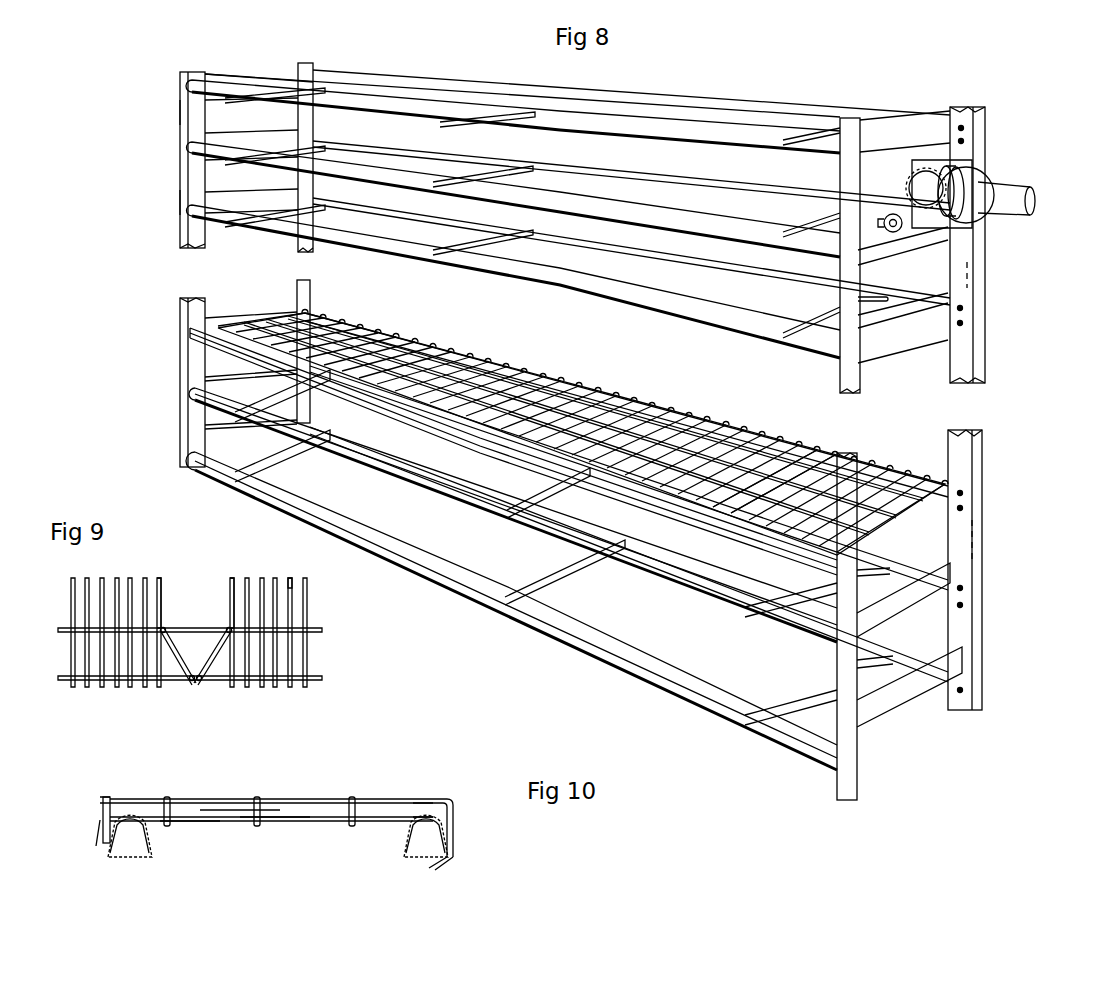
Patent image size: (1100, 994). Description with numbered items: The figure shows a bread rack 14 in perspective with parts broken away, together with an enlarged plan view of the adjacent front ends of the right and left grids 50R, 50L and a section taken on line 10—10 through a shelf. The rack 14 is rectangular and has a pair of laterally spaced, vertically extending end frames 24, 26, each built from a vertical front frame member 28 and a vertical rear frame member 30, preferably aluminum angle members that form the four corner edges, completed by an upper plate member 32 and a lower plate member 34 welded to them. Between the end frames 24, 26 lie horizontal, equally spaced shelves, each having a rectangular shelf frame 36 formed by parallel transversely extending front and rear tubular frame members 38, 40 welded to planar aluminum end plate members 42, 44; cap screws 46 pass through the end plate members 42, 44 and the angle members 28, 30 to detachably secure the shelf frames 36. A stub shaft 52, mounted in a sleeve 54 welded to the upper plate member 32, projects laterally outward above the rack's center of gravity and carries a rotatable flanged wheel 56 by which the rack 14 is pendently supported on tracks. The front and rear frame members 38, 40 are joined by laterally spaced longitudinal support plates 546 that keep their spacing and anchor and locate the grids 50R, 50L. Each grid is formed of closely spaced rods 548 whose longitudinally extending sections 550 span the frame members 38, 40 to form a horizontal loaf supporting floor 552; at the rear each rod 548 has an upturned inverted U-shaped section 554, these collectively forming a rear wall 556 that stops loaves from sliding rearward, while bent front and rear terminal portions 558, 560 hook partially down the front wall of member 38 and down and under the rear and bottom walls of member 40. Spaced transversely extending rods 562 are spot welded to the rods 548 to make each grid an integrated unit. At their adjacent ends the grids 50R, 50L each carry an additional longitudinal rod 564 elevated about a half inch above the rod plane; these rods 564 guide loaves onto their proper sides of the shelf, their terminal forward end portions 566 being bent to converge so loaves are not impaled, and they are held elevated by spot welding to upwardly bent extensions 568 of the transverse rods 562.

In FIG. 8, the section line 10 is at (485, 443).
In FIG. 8, the rack 14 is at (178, 201).
In FIG. 8, the end frame 24 is at (178, 111).
In FIG. 8, the end frame 26 is at (990, 132).
In FIG. 8, the vertical front frame member 28 is at (190, 72).
In FIG. 8, the vertical rear frame member 30 is at (312, 63).
In FIG. 8, the upper plate member 32 is at (965, 160).
In FIG. 8, the lower plate member 34 is at (966, 662).
In FIG. 8, the shelf frame 36 is at (822, 113).
In FIG. 8, the front tubular frame member 38 is at (740, 128).
In FIG. 10, the front tubular frame member 38 is at (145, 845).
In FIG. 8, the rear tubular frame member 40 is at (742, 112).
In FIG. 10, the rear tubular frame member 40 is at (402, 845).
In FIG. 8, the end plate member 42 is at (258, 73).
In FIG. 8, the end plate member 44 is at (928, 126).
In FIG. 8, the cap screw 46 is at (966, 323).
In FIG. 8, the left grid 50L is at (355, 317).
In FIG. 9, the left grid 50L is at (68, 600).
In FIG. 10, the left grid 50L is at (290, 800).
In FIG. 8, the right grid 50R is at (752, 420).
In FIG. 9, the right grid 50R is at (310, 600).
In FIG. 8, the stub shaft 52 is at (1036, 200).
In FIG. 8, the sleeve 54 is at (915, 187).
In FIG. 8, the flanged wheel 56 is at (990, 218).
In FIG. 8, the support plate 546 is at (552, 270).
In FIG. 8, the rod 548 is at (466, 352).
In FIG. 9, the rod 548 is at (305, 570).
In FIG. 10, the rod 548 is at (245, 822).
In FIG. 8, the longitudinally extending section 550 is at (270, 317).
In FIG. 10, the longitudinally extending section 550 is at (295, 820).
In FIG. 8, the bread loaf supporting floor 552 is at (392, 384).
In FIG. 9, the bread loaf supporting floor 552 is at (310, 658).
In FIG. 8, the upturned inverted U-shaped section 554 is at (700, 418).
In FIG. 10, the upturned inverted U-shaped section 554 is at (465, 782).
In FIG. 8, the rear wall 556 is at (725, 415).
In FIG. 10, the rear wall 556 is at (428, 806).
In FIG. 10, the bent front terminal portion 558 is at (102, 836).
In FIG. 10, the bent rear terminal portion 560 is at (448, 860).
In FIG. 8, the transversely extending rod 562 is at (800, 454).
In FIG. 9, the transversely extending rod 562 is at (322, 630).
In FIG. 10, the transversely extending rod 562 is at (170, 800).
In FIG. 8, the elevated longitudinal rod 564 is at (553, 430).
In FIG. 9, the elevated longitudinal rod 564 is at (232, 600).
In FIG. 10, the elevated longitudinal rod 564 is at (278, 800).
In FIG. 9, the terminal forward end portion 566 is at (200, 683).
In FIG. 10, the terminal forward end portion 566 is at (120, 799).
In FIG. 9, the upwardly bent extension 568 is at (192, 674).
In FIG. 10, the upwardly bent extension 568 is at (98, 808).